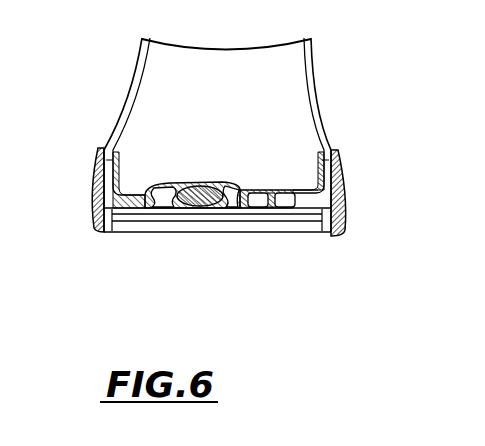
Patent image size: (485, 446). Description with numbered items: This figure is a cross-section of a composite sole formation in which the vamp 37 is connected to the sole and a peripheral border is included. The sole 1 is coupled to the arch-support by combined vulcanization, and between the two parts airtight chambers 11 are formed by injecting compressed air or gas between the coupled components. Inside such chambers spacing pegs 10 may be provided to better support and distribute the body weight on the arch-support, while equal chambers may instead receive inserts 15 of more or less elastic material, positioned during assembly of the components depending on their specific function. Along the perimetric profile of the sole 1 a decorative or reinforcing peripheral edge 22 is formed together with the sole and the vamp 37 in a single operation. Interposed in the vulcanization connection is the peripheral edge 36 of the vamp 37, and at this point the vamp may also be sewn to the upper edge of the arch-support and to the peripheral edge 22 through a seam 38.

The sole 1 is at (213, 233).
The spacing pegs 10 is at (271, 199).
The airtight chambers 11 is at (251, 198).
The inserts 15 is at (187, 233).
The peripheral edge 22 is at (92, 205).
The peripheral edge of vamp 36 is at (120, 234).
The vamp 37 is at (313, 87).
The seam 38 is at (118, 163).